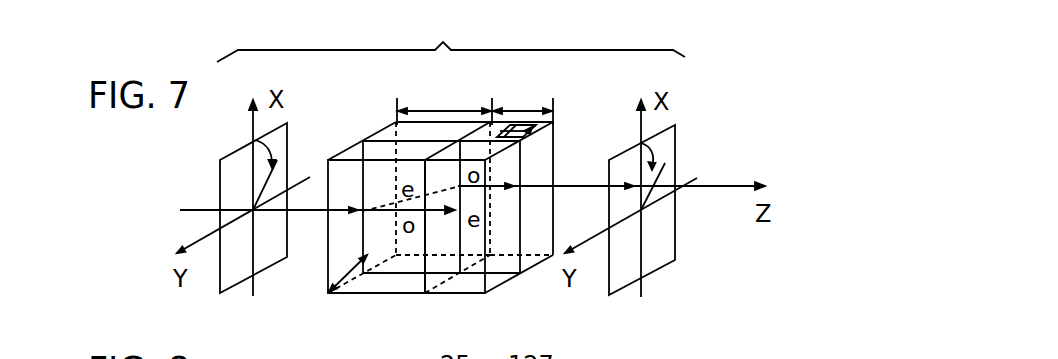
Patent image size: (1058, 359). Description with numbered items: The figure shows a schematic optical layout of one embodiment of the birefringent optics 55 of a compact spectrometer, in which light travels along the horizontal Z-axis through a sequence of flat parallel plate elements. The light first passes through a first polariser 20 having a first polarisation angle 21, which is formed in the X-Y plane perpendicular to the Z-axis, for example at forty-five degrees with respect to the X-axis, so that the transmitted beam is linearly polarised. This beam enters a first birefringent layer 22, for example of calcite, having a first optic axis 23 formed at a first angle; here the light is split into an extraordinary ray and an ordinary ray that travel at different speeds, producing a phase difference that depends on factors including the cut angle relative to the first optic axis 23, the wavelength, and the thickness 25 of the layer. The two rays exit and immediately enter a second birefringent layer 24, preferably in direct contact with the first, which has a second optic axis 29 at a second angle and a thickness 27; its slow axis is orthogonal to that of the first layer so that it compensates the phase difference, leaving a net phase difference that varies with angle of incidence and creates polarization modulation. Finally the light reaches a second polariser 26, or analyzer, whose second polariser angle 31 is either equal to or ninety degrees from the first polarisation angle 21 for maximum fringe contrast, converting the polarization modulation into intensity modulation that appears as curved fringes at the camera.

The first polariser 20 is at (248, 272).
The first polarisation angle 21 is at (253, 142).
The first birefringent layer 22 is at (395, 285).
The first optic axis 23 is at (340, 282).
The second birefringent layer 24 is at (477, 275).
The thickness of the first birefringent layer 25 is at (438, 110).
The second polariser 26 is at (635, 270).
The thickness of the second birefringent layer 27 is at (515, 110).
The second optic axis 29 is at (556, 130).
The second polariser angle 31 is at (641, 143).
The birefringent optics 55 is at (451, 39).